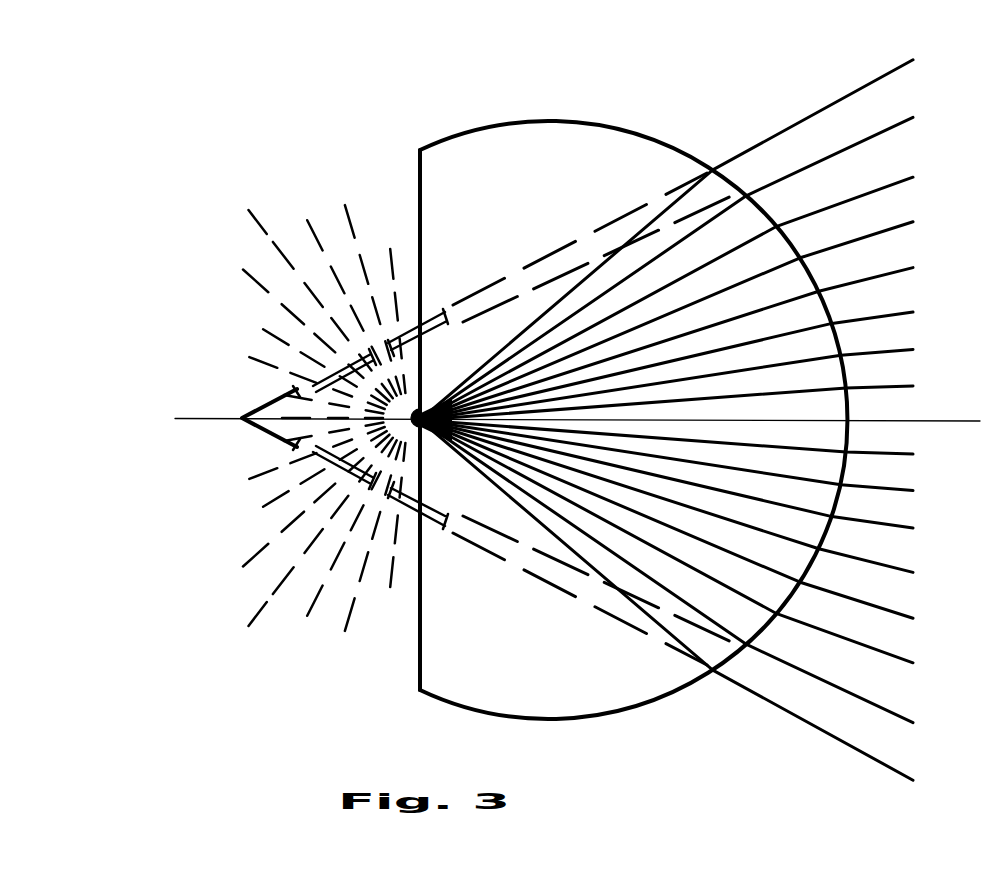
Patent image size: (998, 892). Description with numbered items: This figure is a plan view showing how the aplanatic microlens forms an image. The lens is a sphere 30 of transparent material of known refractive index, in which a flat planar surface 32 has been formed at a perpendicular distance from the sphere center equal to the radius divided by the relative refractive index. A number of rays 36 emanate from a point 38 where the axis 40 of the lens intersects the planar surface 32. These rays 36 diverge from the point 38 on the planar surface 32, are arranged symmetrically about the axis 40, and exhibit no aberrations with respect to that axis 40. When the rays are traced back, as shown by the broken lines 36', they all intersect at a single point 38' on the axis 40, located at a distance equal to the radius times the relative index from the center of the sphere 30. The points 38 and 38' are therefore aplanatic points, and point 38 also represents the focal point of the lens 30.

The sphere 30 is at (623, 690).
The planar surface 32 is at (417, 626).
The rays 36 is at (666, 435).
The broken lines 36' is at (526, 431).
The point 38 is at (415, 309).
The point 38' is at (271, 418).
The axis 40 is at (931, 422).